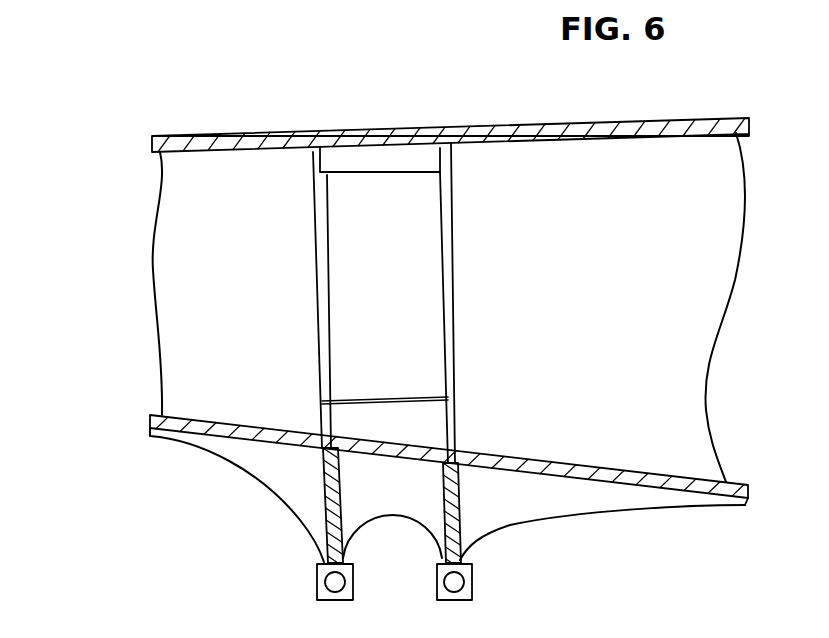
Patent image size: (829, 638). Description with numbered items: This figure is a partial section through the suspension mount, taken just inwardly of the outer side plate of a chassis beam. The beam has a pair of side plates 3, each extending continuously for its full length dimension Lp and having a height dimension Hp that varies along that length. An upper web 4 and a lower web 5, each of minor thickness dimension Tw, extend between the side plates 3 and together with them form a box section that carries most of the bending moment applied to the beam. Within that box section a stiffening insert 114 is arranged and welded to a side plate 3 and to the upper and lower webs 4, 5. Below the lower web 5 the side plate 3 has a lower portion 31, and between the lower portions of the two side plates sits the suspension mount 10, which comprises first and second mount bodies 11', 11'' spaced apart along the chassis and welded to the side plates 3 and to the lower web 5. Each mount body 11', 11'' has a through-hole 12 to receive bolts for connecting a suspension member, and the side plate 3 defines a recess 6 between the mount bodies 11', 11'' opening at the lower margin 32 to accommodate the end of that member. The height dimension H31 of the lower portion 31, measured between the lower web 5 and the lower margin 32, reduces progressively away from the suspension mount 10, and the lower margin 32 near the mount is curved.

The side plate 3 is at (687, 381).
The upper web 4 is at (523, 146).
The lower web 5 is at (524, 458).
The recess 6 is at (396, 544).
The suspension mount 10 is at (297, 569).
The first mount body 11' is at (357, 524).
The second mount body 11'' is at (436, 531).
The through-hole 12 is at (133, 10).
The lower portion 31 is at (566, 513).
The lower margin 32 is at (690, 509).
The stiffening insert 114 is at (340, 292).
The height dimension of lower portion H31 is at (487, 468).
The length dimension of side plate Lp is at (773, 78).
The height dimension of side plate Hp is at (38, 137).
The thickness dimension of web Tw is at (115, 137).